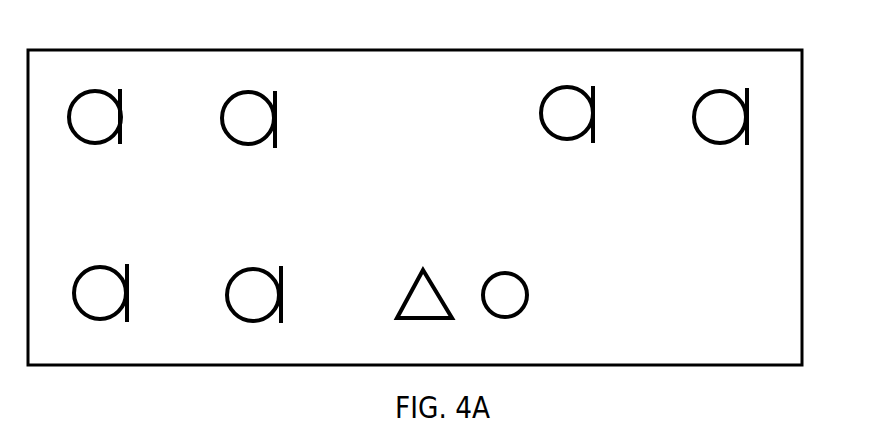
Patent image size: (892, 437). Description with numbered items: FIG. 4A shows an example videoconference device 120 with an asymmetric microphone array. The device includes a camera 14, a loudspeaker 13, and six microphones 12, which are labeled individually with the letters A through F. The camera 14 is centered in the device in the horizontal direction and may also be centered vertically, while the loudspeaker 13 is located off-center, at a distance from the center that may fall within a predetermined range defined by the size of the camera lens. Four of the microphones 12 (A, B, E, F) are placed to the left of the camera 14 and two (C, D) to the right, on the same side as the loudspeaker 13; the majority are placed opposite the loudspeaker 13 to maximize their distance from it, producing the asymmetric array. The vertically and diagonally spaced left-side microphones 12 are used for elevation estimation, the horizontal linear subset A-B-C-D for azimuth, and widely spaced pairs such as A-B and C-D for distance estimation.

The housing / panel 120 is at (330, 50).
The microphones 12 is at (122, 101).
The loudspeaker 13 is at (507, 271).
The camera 14 is at (417, 278).